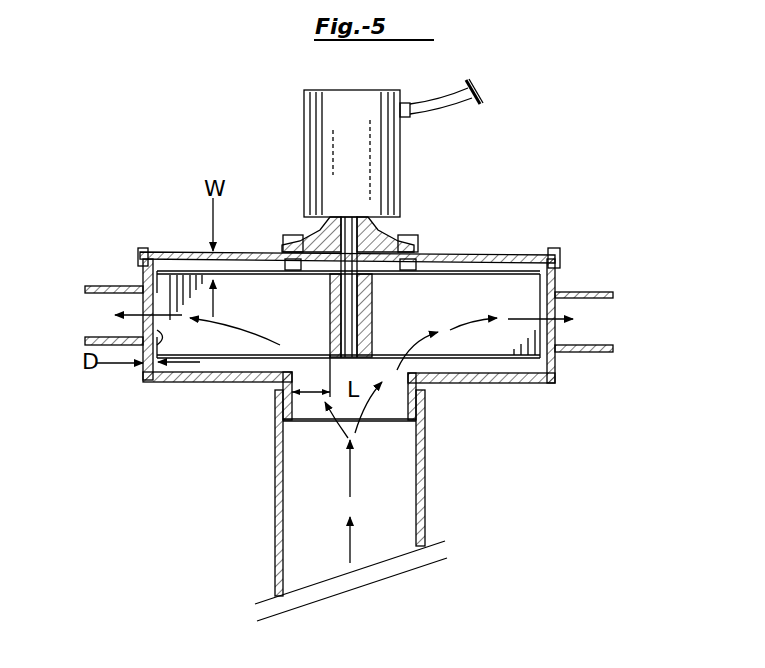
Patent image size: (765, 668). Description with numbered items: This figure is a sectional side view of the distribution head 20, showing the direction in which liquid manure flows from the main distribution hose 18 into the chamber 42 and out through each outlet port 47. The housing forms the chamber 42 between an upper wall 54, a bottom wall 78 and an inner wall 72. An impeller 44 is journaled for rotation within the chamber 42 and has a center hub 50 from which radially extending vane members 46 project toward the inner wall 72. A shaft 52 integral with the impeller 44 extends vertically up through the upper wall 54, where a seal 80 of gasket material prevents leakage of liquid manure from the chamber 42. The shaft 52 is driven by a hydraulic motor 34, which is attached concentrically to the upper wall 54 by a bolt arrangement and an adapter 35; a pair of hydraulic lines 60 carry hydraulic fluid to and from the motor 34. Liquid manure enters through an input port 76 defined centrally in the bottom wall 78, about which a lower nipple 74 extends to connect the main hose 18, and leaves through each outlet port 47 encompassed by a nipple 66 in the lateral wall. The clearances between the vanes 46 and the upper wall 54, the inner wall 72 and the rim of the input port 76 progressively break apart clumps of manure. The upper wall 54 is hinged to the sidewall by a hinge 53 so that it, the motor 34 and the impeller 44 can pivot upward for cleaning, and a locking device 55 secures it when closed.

The distribution head 20 is at (278, 143).
The motor 34 is at (304, 120).
The hydraulic lines 60 is at (447, 95).
The hinge 53 is at (138, 251).
The upper wall 54 is at (182, 250).
The locking device 55 is at (553, 250).
The shaft 52 is at (334, 241).
The seal 80 is at (323, 293).
The adapter 35 is at (378, 271).
The vane members 46 is at (264, 307).
The inner wall 72 is at (155, 335).
The nipple 66 is at (565, 290).
The outlet port 47 is at (598, 330).
The impeller 44 is at (224, 374).
The bottom wall 78 is at (180, 381).
The chamber 42 is at (455, 383).
The lower nipple 74 is at (273, 383).
The hub 50 is at (327, 368).
The input port 76 is at (383, 372).
The main distribution hose 18 is at (275, 525).